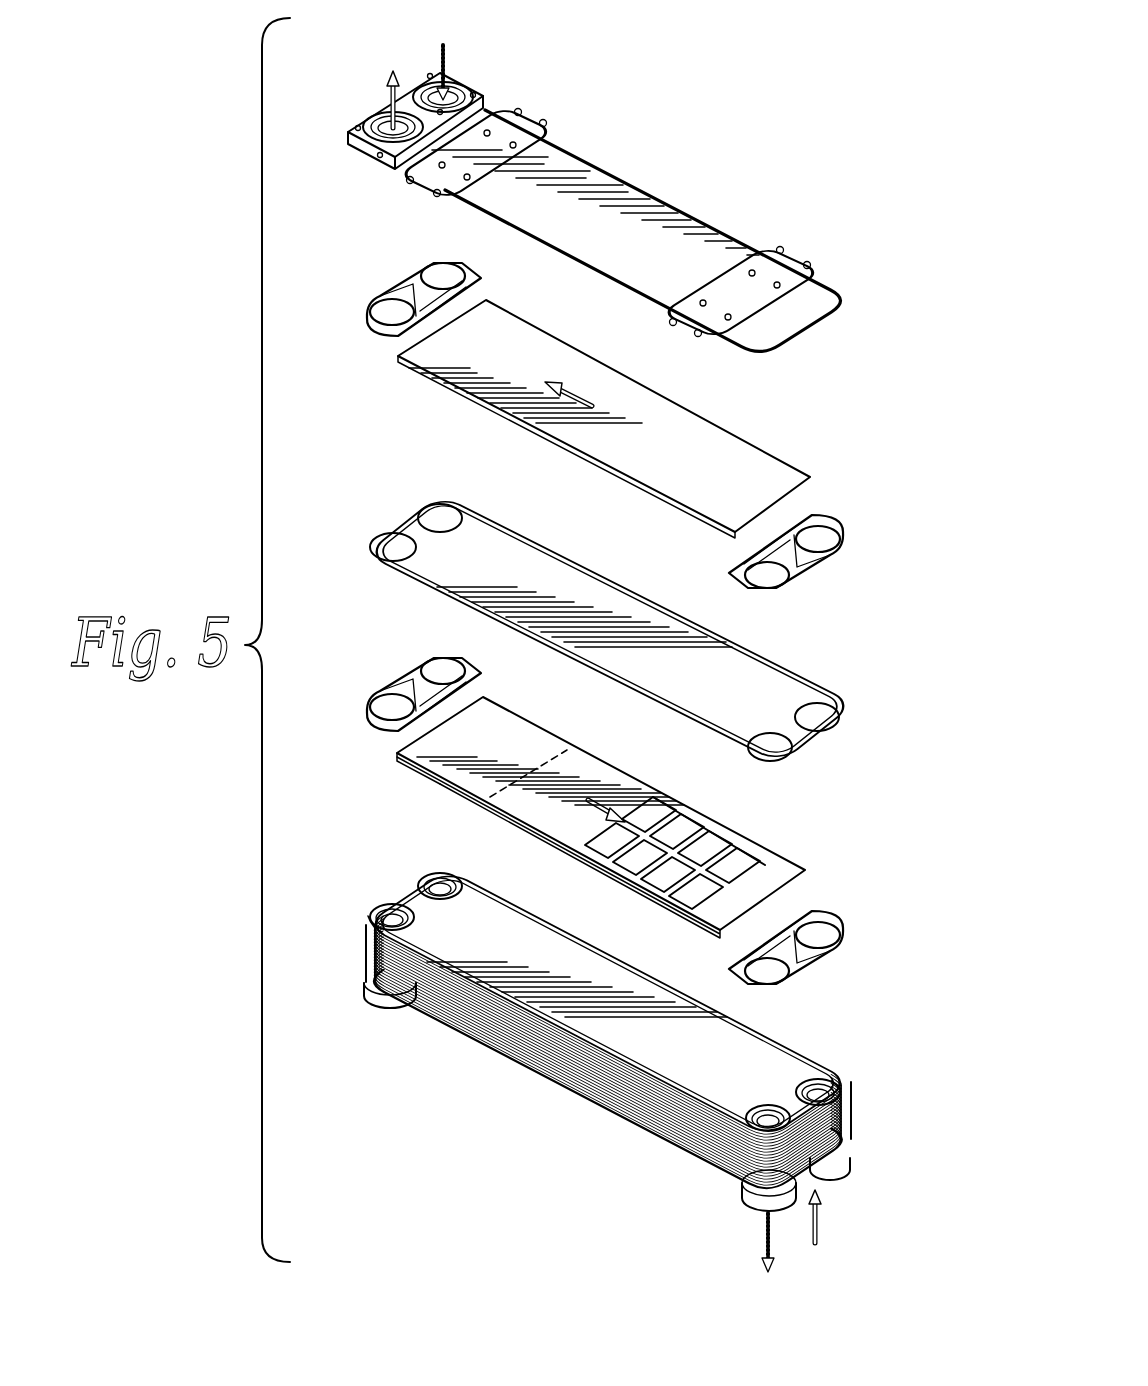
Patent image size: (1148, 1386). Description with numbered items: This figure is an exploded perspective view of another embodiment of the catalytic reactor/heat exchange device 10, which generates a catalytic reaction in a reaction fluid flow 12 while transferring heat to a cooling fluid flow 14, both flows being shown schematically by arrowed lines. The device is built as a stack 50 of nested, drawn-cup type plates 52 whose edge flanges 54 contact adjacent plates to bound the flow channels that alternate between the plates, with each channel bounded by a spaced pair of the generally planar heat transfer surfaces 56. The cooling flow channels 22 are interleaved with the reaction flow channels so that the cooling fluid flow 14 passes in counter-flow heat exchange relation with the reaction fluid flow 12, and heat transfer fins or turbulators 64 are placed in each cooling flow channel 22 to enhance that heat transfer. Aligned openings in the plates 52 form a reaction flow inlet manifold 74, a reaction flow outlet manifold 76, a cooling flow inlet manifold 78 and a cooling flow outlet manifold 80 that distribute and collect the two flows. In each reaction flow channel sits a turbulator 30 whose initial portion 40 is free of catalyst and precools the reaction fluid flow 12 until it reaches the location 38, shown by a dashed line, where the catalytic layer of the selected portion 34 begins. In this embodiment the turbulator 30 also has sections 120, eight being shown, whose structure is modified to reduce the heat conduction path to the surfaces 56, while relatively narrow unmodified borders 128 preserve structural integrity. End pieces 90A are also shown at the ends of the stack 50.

The catalytic reactor/heat exchange device 10 is at (689, 120).
The reaction fluid flow 12 is at (441, 66).
The cooling fluid flow 14 is at (388, 86).
The cooling flow channels 22 is at (610, 604).
The turbulator 30 is at (586, 748).
The selected portion 34 is at (600, 872).
The location 38 is at (540, 766).
The initial portion 40 is at (437, 787).
The stack 50 is at (345, 272).
The plates 52 is at (364, 936).
The edge flanges 54 is at (403, 520).
The heat transfer surfaces 56 is at (606, 278).
The heat transfer fins or turbulators 64 is at (548, 348).
The reaction flow inlet manifold 74 is at (432, 884).
The reaction flow outlet manifold 76 is at (752, 1110).
The cooling flow inlet manifold 78 is at (817, 1088).
The cooling flow outlet manifold 80 is at (410, 922).
The end fitting insert 90A is at (384, 292).
The sections 120 is at (717, 892).
The borders 128 is at (682, 853).